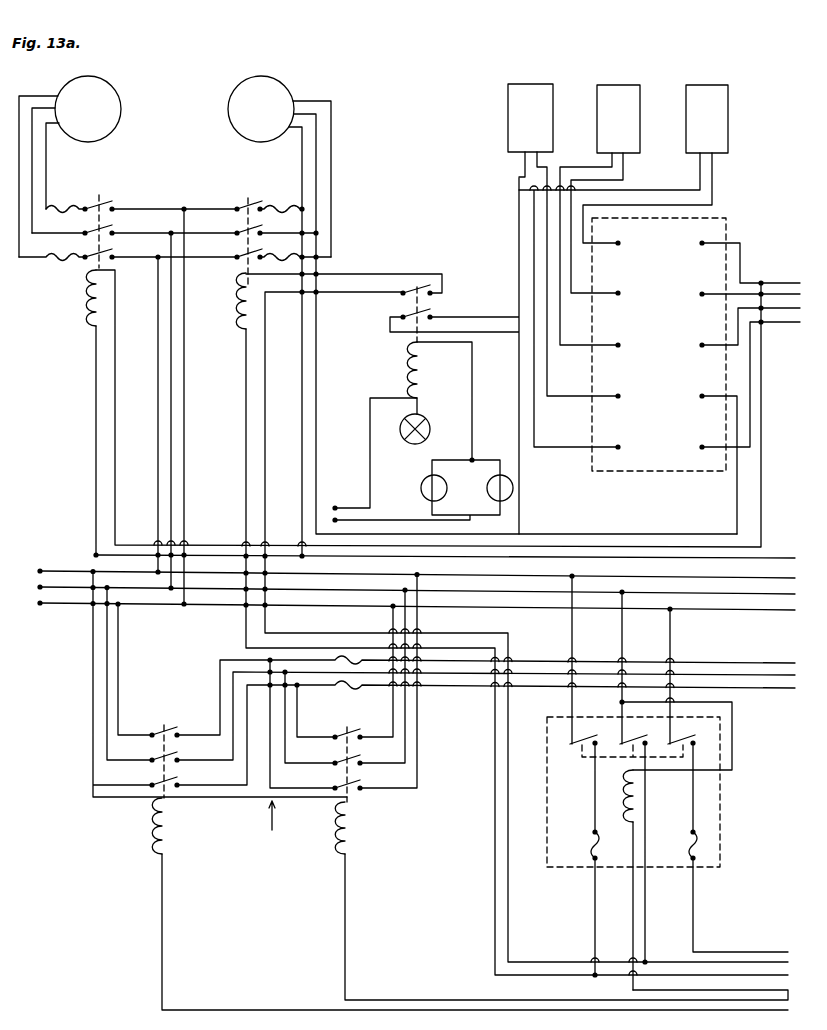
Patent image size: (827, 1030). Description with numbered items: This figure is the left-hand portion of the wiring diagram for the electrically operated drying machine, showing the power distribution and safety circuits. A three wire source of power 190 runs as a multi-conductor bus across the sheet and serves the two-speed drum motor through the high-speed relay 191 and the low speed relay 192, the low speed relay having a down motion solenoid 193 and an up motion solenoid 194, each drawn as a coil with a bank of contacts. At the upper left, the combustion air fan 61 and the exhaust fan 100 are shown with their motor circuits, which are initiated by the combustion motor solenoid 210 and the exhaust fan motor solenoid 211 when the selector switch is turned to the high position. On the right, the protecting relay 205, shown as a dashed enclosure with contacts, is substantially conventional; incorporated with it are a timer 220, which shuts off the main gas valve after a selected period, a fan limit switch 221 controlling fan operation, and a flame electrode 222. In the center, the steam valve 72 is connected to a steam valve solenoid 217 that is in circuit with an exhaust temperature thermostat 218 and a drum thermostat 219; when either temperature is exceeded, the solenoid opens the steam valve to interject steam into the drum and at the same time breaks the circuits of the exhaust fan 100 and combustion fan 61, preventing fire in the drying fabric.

The combustion air fan 61 is at (110, 92).
The exhaust fan 100 is at (283, 92).
The steam valve 72 is at (429, 419).
The three wire source of power 190 is at (19, 566).
The high-speed relay 191 is at (717, 843).
The low speed relay 192 is at (270, 825).
The down motion solenoid 193 is at (356, 824).
The up motion solenoid 194 is at (155, 820).
The protecting relay 205 is at (733, 226).
The combustion motor solenoid 210 is at (88, 316).
The exhaust fan motor solenoid 211 is at (238, 314).
The steam valve solenoid 217 is at (406, 366).
The exhaust temperature thermostat 218 is at (421, 490).
The thermostat 219 is at (514, 488).
The timer 220 is at (640, 88).
The fan limit switch 221 is at (728, 90).
The flame electrode 222 is at (510, 88).